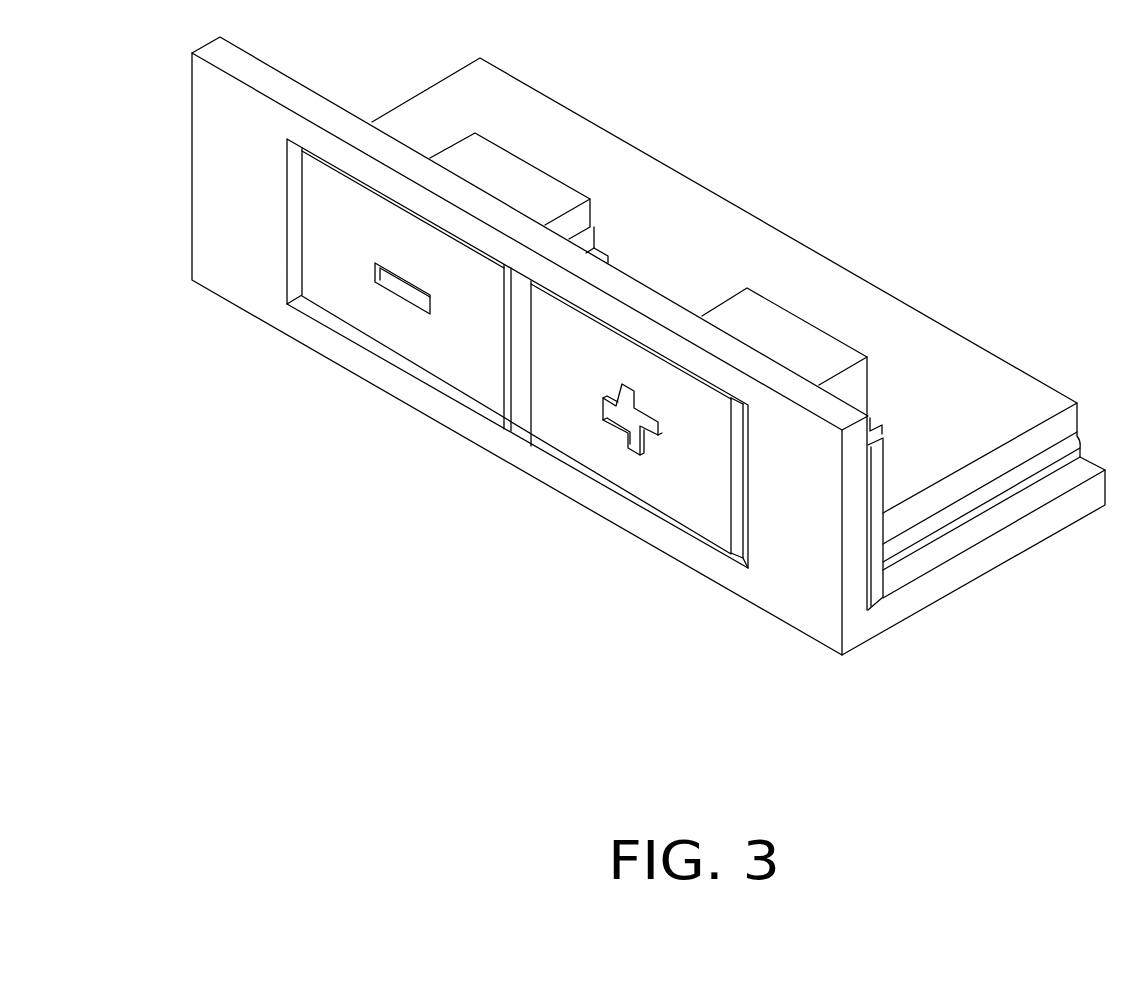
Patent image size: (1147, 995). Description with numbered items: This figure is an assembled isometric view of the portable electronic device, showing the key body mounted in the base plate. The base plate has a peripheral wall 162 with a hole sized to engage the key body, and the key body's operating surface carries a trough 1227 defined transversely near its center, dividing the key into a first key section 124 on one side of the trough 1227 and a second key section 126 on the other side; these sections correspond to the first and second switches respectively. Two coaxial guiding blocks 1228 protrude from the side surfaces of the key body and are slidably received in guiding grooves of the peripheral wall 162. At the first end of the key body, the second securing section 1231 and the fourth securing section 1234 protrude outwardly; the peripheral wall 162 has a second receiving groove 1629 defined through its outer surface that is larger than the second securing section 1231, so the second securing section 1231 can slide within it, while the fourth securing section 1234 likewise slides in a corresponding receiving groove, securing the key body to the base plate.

The peripheral wall 162 is at (815, 583).
The second receiving groove 1629 is at (289, 230).
The second securing section 1231 is at (335, 300).
The first key section 124 is at (470, 355).
The trough 1227 is at (527, 398).
The second key section 126 is at (543, 412).
The fourth securing section 1234 is at (720, 498).
The guiding blocks 1228 is at (745, 562).